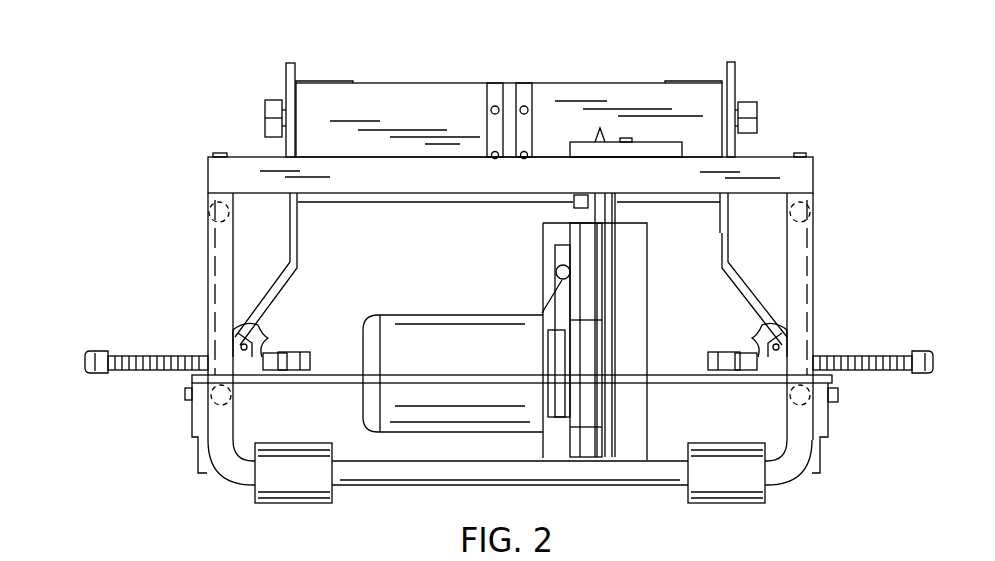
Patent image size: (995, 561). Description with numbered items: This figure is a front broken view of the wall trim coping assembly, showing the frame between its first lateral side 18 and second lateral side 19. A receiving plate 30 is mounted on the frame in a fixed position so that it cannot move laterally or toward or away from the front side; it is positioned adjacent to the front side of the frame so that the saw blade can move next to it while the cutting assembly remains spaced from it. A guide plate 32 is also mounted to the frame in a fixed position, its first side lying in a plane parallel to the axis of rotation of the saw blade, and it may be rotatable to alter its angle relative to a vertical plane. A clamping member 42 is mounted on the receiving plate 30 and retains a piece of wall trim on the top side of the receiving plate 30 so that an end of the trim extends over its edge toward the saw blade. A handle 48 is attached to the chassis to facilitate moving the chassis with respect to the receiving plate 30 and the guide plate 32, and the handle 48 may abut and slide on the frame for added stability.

The first lateral side 18 is at (815, 320).
The second lateral side 19 is at (202, 305).
The receiving plate 30 is at (668, 380).
The guide plate 32 is at (625, 100).
The clamping member 42 is at (138, 370).
The handle 48 is at (658, 145).